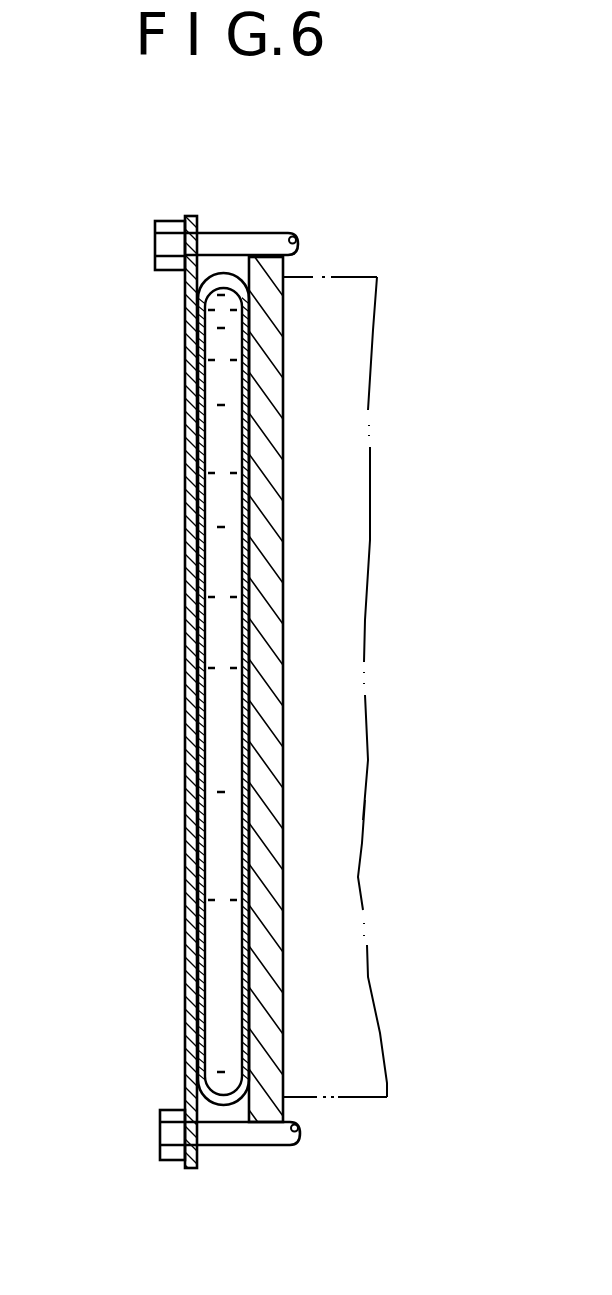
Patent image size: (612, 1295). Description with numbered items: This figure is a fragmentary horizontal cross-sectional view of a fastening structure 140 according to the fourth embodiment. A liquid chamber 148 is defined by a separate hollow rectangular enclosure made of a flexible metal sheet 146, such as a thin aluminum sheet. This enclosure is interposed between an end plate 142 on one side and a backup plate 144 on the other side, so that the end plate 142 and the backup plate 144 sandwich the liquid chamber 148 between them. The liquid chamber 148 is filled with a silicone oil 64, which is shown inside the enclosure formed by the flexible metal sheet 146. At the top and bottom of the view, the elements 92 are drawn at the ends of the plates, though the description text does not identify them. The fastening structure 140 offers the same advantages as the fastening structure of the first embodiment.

The fastening structure 140 is at (296, 197).
The pipe 92 is at (228, 247).
The end plate 142 is at (284, 384).
The backup plate 144 is at (184, 528).
The silicone oil 64 is at (228, 525).
The liquid chamber 148 is at (225, 635).
The flexible metal sheet 146 is at (248, 780).